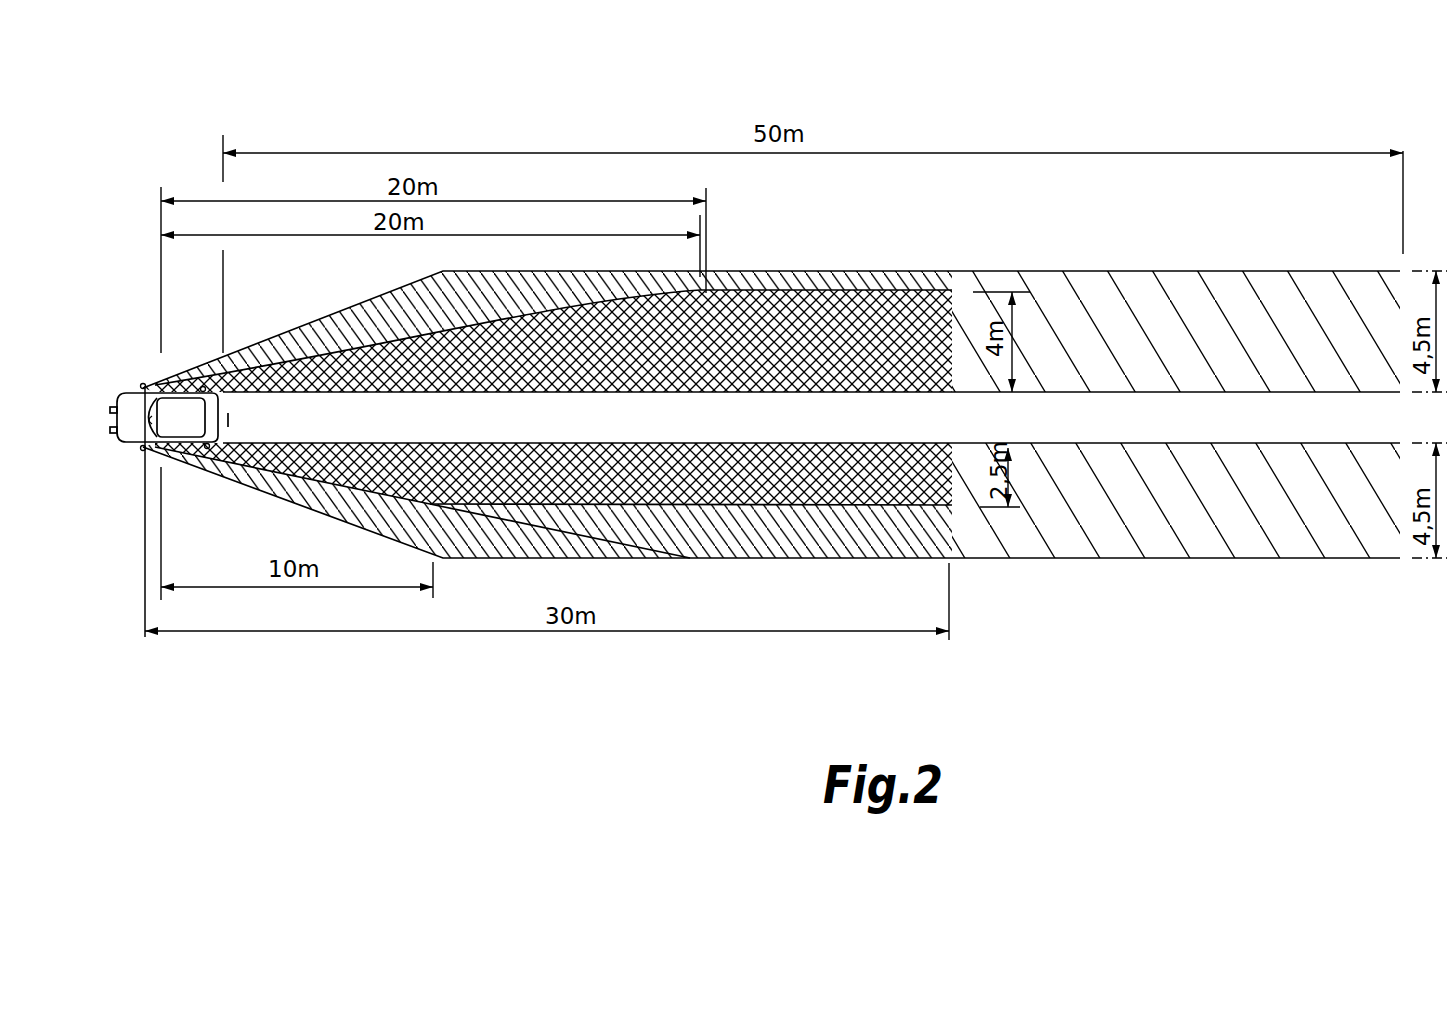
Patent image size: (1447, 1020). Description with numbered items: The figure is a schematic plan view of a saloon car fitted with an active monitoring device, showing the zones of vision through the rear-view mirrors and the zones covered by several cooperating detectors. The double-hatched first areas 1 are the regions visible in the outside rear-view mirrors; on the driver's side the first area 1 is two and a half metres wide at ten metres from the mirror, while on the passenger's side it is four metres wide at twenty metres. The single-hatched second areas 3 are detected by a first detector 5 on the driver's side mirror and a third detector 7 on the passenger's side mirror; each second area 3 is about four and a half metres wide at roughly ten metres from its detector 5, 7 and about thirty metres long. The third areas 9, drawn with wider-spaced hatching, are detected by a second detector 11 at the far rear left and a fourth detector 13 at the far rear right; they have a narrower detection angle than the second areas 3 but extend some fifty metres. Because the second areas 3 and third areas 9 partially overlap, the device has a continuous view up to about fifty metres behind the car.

The first area 1 is at (925, 295).
The second area 3 is at (490, 293).
The first detector 5 is at (143, 448).
The third detector 7 is at (143, 385).
The third area 9 is at (1150, 308).
The second detector 11 is at (207, 448).
The fourth detector 13 is at (202, 387).